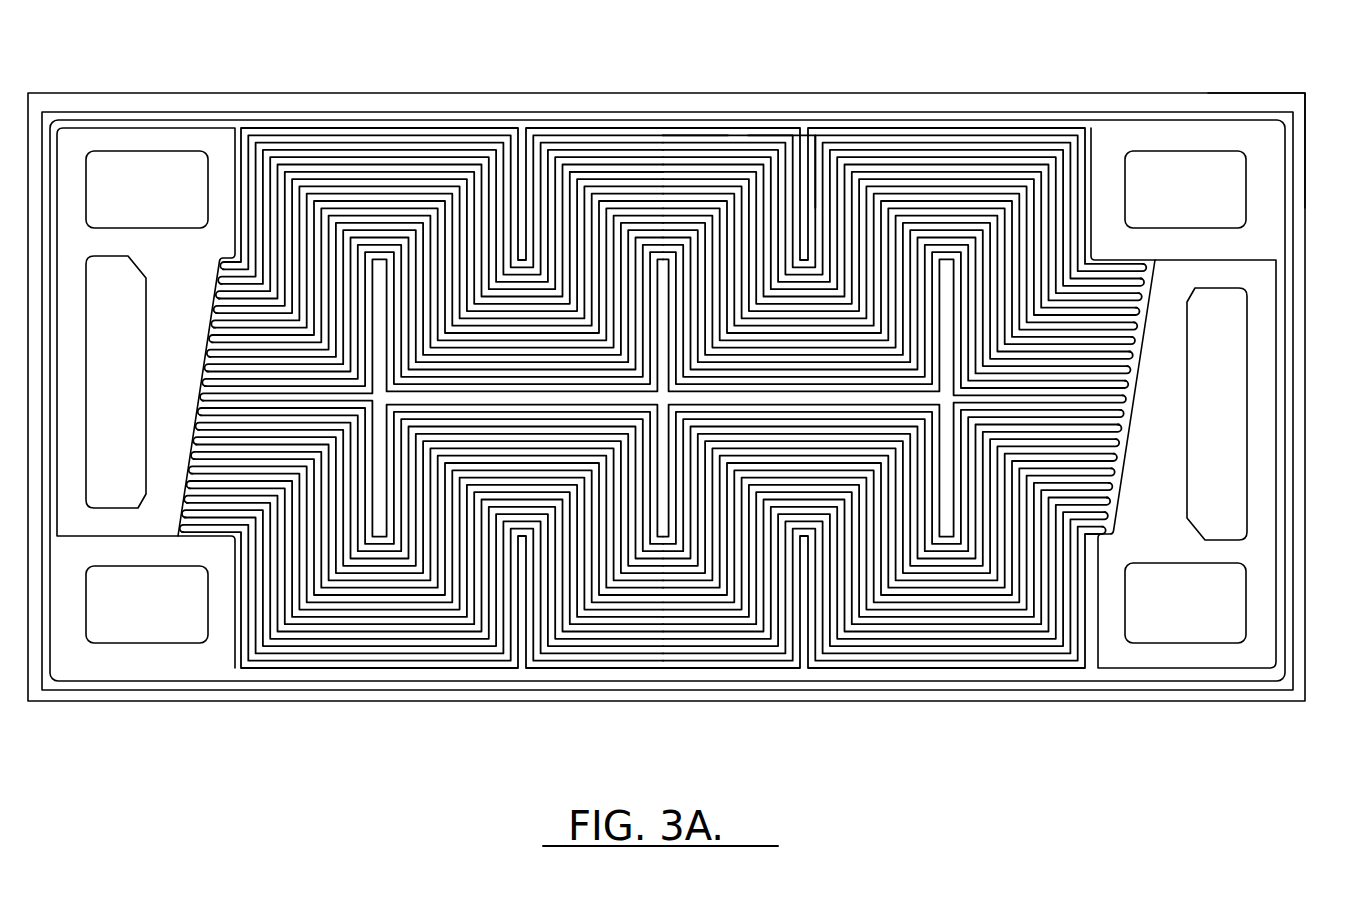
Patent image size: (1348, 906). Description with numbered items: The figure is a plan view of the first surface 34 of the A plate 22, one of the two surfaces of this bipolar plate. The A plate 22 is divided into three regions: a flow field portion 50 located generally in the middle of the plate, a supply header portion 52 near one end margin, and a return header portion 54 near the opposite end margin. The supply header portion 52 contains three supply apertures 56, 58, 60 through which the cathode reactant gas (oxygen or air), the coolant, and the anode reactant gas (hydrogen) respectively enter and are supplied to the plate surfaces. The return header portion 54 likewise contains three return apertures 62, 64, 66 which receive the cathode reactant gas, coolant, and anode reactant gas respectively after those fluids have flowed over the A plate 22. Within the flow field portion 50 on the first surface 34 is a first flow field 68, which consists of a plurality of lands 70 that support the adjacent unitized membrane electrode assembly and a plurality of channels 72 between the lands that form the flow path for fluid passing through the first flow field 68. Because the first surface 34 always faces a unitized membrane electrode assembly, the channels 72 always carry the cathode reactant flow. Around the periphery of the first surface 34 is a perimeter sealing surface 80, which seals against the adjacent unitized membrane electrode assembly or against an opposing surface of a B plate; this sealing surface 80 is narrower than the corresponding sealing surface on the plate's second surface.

The A plate 22 is at (1186, 728).
The first surface 34 is at (1048, 735).
The flow field portion 50 is at (663, 344).
The supply header portion 52 is at (1170, 66).
The return header portion 54 is at (172, 68).
The supply aperture 56 is at (1200, 478).
The supply aperture 58 is at (1160, 598).
The supply aperture 60 is at (1210, 172).
The return aperture 62 is at (110, 365).
The return aperture 64 is at (150, 186).
The return aperture 66 is at (130, 615).
The first flow field 68 is at (590, 165).
The lands 70 is at (680, 130).
The channels 72 is at (785, 130).
The perimeter sealing surface 80 is at (1270, 318).